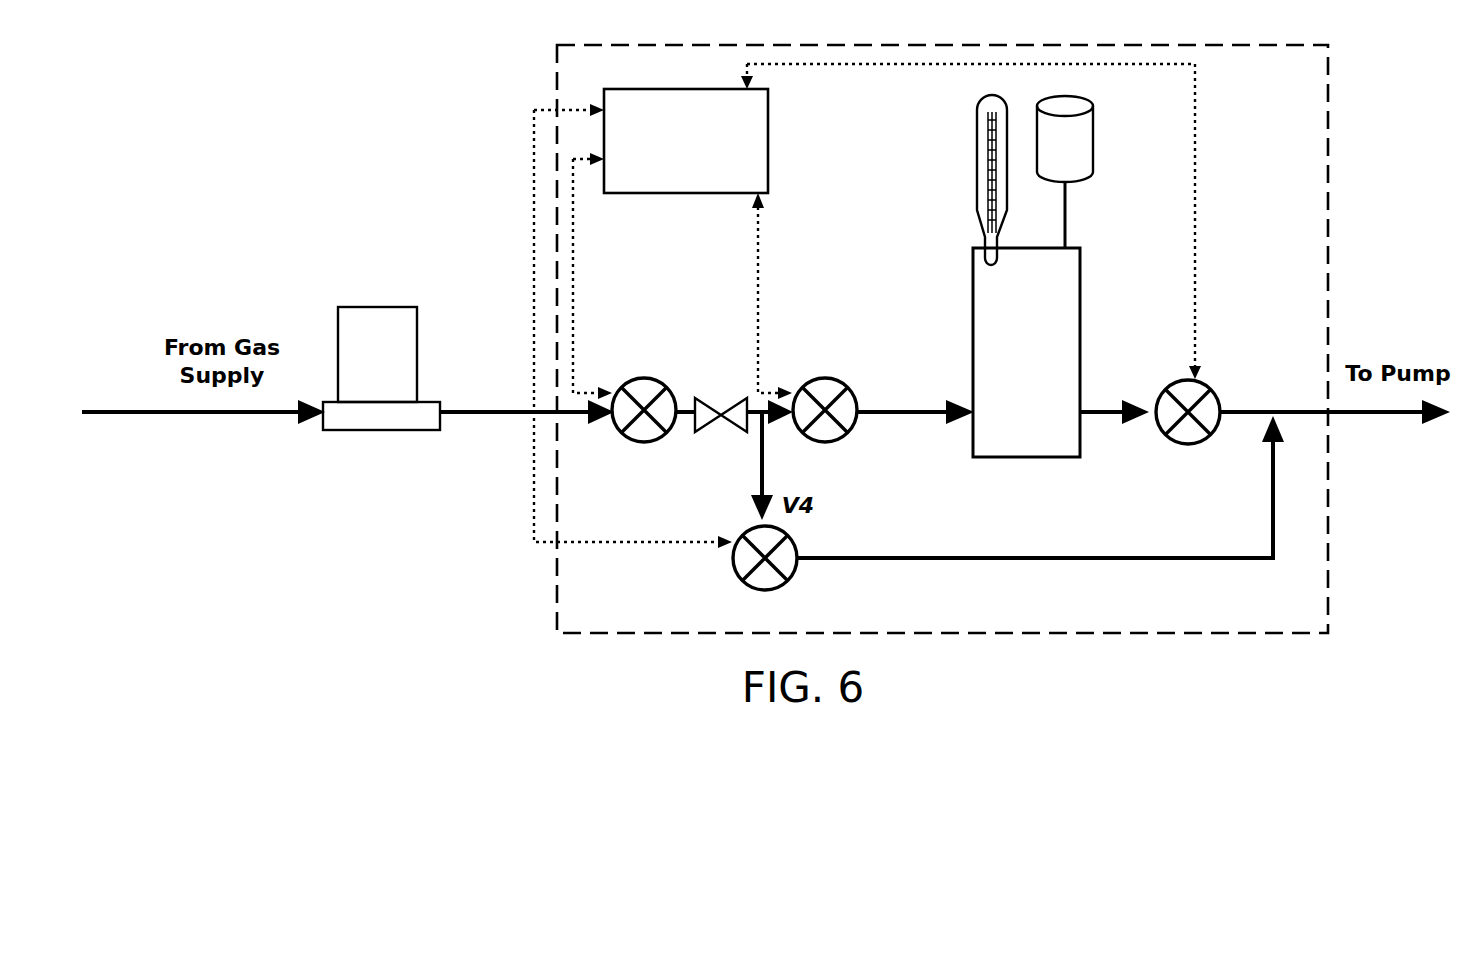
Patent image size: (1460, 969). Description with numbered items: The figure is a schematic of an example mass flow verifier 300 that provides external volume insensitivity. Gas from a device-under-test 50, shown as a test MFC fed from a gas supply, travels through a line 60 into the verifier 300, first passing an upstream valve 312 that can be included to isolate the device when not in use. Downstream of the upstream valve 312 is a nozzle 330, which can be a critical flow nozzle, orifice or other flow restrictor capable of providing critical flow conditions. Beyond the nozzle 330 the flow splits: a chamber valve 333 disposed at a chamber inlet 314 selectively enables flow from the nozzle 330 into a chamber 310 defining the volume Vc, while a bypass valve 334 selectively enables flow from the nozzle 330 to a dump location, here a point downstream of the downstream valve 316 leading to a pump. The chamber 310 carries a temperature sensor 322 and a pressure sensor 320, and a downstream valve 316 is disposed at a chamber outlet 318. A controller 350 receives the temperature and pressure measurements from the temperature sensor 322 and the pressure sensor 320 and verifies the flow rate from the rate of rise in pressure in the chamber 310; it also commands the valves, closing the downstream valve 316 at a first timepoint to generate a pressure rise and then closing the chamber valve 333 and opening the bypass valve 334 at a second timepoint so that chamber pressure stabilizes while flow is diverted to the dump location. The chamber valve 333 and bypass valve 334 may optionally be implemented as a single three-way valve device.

The device-under-test 50 is at (379, 306).
The line 60 is at (491, 421).
The mass flow verifier 300 is at (1330, 136).
The controller 350 is at (867, 306).
The upstream valve 312 is at (650, 376).
The nozzle 330 is at (722, 398).
The chamber valve 333 is at (843, 441).
The bypass valve 334 is at (806, 546).
The chamber inlet 314 is at (960, 398).
The chamber 310 is at (1026, 352).
The temperature sensor 322 is at (975, 177).
The pressure sensor 320 is at (1095, 151).
The chamber outlet 318 is at (1098, 408).
The downstream valve 316 is at (1222, 396).